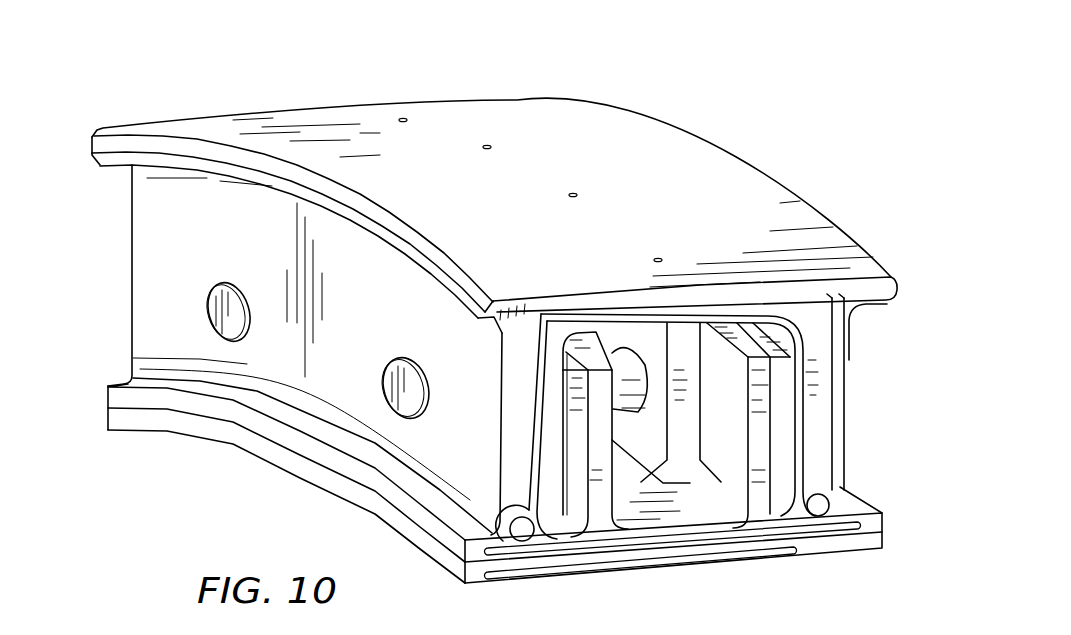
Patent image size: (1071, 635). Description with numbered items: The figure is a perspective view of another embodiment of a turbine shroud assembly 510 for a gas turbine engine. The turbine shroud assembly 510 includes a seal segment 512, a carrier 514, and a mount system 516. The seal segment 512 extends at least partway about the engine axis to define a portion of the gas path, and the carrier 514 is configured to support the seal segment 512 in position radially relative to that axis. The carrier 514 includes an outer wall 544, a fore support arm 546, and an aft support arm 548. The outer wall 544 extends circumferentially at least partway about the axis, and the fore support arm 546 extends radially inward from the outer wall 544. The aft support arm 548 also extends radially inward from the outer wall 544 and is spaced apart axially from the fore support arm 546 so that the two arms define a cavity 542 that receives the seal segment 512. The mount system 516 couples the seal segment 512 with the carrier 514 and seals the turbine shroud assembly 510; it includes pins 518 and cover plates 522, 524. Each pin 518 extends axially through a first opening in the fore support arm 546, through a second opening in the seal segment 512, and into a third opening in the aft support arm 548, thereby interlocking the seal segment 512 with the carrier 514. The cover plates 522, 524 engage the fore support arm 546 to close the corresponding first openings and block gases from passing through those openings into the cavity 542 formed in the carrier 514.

The turbine shroud assembly 510 is at (118, 67).
The seal segment 512 is at (568, 583).
The carrier 514 is at (517, 96).
The mount system 516 is at (102, 308).
The pin 518 is at (622, 418).
The cover plate 522 is at (380, 409).
The cover plate 524 is at (196, 324).
The cavity 542 is at (659, 507).
The outer wall 544 is at (605, 156).
The fore support arm 546 is at (361, 287).
The aft support arm 548 is at (886, 377).